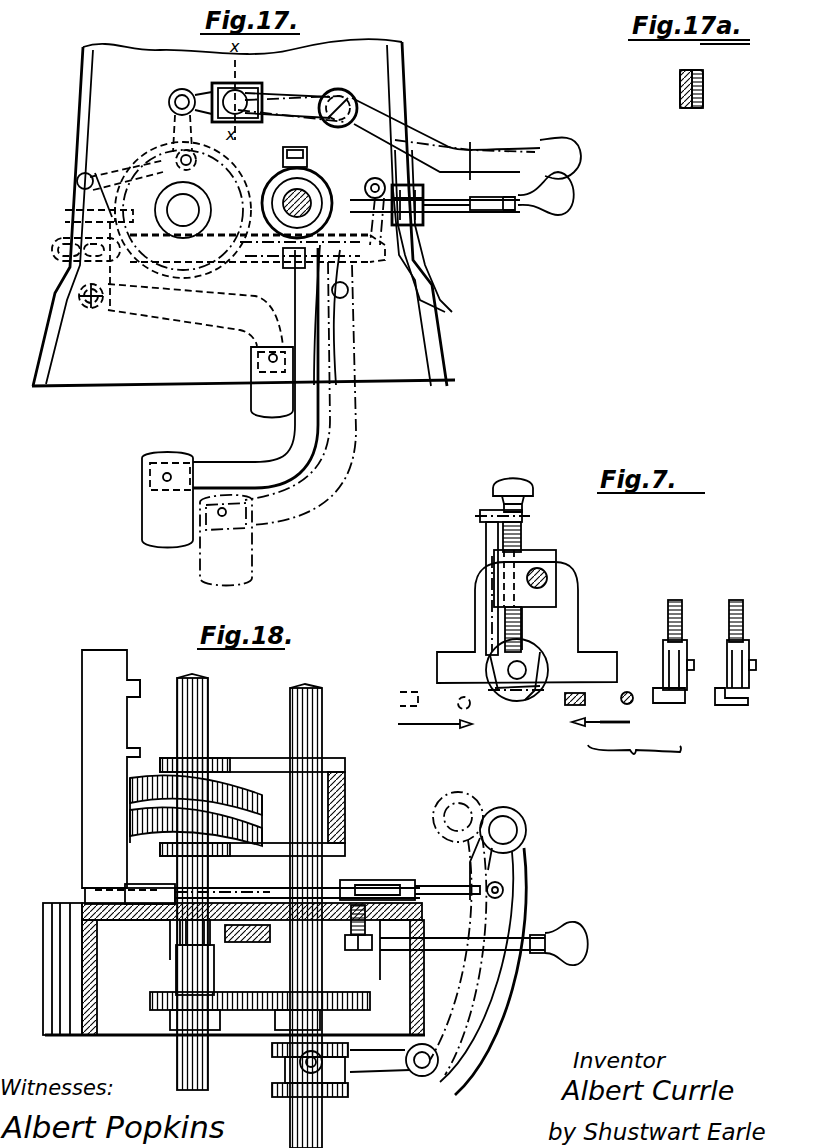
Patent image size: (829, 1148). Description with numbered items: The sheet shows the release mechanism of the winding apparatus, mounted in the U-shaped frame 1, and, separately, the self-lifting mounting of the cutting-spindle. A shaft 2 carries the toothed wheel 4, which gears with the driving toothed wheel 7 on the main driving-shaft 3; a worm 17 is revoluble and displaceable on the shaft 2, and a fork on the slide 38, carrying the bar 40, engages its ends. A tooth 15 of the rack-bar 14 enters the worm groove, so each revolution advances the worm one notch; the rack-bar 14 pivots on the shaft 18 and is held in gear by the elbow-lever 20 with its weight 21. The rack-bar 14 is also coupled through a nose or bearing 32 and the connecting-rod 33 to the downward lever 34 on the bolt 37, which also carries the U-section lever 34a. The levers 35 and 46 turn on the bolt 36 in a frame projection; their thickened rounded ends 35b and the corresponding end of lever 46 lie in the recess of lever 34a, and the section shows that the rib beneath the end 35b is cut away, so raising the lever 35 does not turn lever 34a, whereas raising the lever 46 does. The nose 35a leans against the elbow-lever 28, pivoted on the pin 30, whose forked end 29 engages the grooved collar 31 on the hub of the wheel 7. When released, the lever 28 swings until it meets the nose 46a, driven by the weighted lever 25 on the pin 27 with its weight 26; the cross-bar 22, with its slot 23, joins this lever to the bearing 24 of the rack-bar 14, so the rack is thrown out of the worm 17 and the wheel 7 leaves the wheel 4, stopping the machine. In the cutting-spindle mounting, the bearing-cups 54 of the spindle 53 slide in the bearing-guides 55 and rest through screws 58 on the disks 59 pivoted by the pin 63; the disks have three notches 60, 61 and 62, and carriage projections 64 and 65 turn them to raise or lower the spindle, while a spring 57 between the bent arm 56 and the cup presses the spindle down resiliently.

In FIG. 17, the U-shaped frame 1 is at (84, 88).
In FIG. 18, the U-shaped frame 1 is at (45, 955).
In FIG. 17, the shaft 2 is at (186, 208).
In FIG. 18, the shaft 2 is at (180, 714).
In FIG. 17, the main driving-shaft 3 is at (302, 203).
In FIG. 18, the main driving-shaft 3 is at (320, 746).
In FIG. 17, the toothed wheel 4 is at (221, 162).
In FIG. 18, the toothed wheel 4 is at (162, 1012).
In FIG. 18, the driving toothed wheel 7 is at (366, 998).
In FIG. 17, the rack-bar 14 is at (110, 212).
In FIG. 18, the rack-bar 14 is at (95, 727).
In FIG. 18, the tooth of rack-bar 15 is at (132, 684).
In FIG. 18, the worm 17 is at (207, 795).
In FIG. 17, the shaft 18 is at (90, 306).
In FIG. 17, the elbow-lever 20 is at (195, 320).
In FIG. 17, the weight 21 is at (256, 406).
In FIG. 17, the cross-bar 22 is at (256, 250).
In FIG. 18, the cross-bar 22 is at (260, 897).
In FIG. 17, the slot 23 is at (56, 254).
In FIG. 17, the bearing 24 is at (76, 293).
In FIG. 17, the weighted lever 25 is at (295, 452).
In FIG. 18, the weighted lever 25 is at (402, 885).
In FIG. 17, the weight 26 is at (161, 530).
In FIG. 17, the pin 27 is at (349, 290).
In FIG. 17, the elbow-lever 28 is at (510, 212).
In FIG. 18, the elbow-lever 28 is at (492, 1000).
In FIG. 18, the forked end 29 is at (348, 1072).
In FIG. 17, the pin 30 is at (415, 227).
In FIG. 18, the pin 30 is at (424, 1068).
In FIG. 17, the grooved collar 31 is at (296, 256).
In FIG. 18, the grooved collar 31 is at (280, 1080).
In FIG. 17, the bearing 32 is at (77, 182).
In FIG. 18, the bearing 32 is at (90, 900).
In FIG. 17, the connecting-rod 33 is at (116, 172).
In FIG. 18, the connecting-rod 33 is at (153, 900).
In FIG. 17, the elbow-lever 34 is at (178, 128).
In FIG. 18, the elbow-lever 34 is at (211, 904).
In FIG. 17, the lever 34a is at (270, 76).
In FIG. 17A, the lever 34a is at (694, 110).
In FIG. 18, the lever 34a is at (232, 928).
In FIG. 17, the lever 35 is at (292, 100).
In FIG. 17A, the lever 35 is at (680, 96).
In FIG. 18, the lever 35 is at (520, 945).
In FIG. 17, the nose 35a is at (470, 212).
In FIG. 17, the backward end of lever 35b is at (230, 85).
In FIG. 17, the bolt 36 is at (345, 98).
In FIG. 18, the bolt 36 is at (366, 945).
In FIG. 17, the bolt 37 is at (181, 95).
In FIG. 18, the bolt 37 is at (184, 926).
In FIG. 18, the slide 38 is at (262, 770).
In FIG. 18, the bar 40 is at (340, 811).
In FIG. 17, the lever 46 is at (505, 182).
In FIG. 17A, the lever 46 is at (703, 95).
In FIG. 18, the lever 46 is at (518, 935).
In FIG. 17, the nose 46a is at (440, 206).
In FIG. 7, the spindle 53 is at (546, 580).
In FIG. 7, the bearing-cup 54 is at (548, 557).
In FIG. 7, the bearing-guide 55 is at (479, 600).
In FIG. 7, the bent arm 56 is at (486, 546).
In FIG. 7, the spring 57 is at (522, 540).
In FIG. 7, the screw 58 is at (497, 490).
In FIG. 7, the disk 59 is at (540, 670).
In FIG. 7, the notch 60 is at (523, 636).
In FIG. 7, the notch 61 is at (530, 692).
In FIG. 7, the notch 62 is at (519, 704).
In FIG. 7, the pin 63 is at (511, 666).
In FIG. 7, the projection 64 is at (399, 698).
In FIG. 7, the projection 65 is at (458, 703).